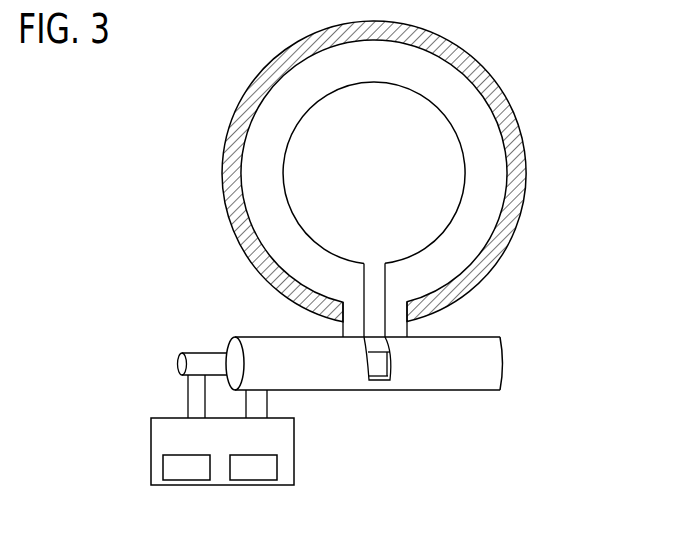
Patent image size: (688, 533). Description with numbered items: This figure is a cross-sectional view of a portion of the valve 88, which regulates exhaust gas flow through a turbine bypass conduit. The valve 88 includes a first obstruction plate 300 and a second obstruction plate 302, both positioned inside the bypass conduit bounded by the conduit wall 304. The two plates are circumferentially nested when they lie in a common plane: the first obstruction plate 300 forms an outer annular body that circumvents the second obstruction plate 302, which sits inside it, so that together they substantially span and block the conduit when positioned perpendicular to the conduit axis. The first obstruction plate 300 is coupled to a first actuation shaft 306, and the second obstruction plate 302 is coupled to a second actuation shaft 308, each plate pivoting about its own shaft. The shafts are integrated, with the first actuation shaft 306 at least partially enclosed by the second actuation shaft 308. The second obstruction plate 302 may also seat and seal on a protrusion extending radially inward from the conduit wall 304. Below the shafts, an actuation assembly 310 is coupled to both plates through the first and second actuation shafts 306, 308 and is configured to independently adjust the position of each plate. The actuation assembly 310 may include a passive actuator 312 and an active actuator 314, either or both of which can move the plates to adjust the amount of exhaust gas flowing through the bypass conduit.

The valve 88 is at (570, 350).
The first obstruction plate 300 is at (389, 184).
The second obstruction plate 302 is at (277, 184).
The conduit wall 304 is at (521, 171).
The first actuation shaft 306 is at (202, 364).
The second actuation shaft 308 is at (463, 379).
The actuation assembly 310 is at (238, 448).
The passive actuator 312 is at (202, 479).
The active actuator 314 is at (269, 479).